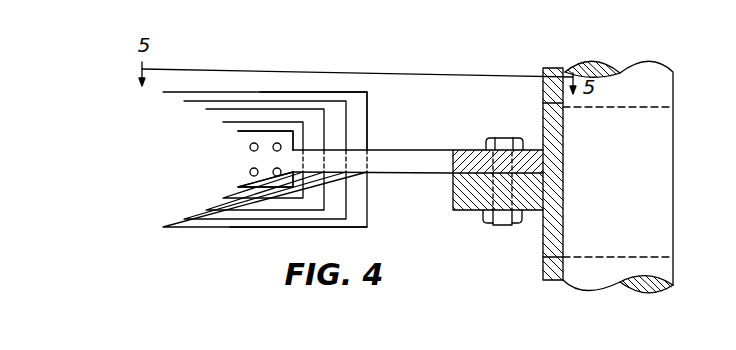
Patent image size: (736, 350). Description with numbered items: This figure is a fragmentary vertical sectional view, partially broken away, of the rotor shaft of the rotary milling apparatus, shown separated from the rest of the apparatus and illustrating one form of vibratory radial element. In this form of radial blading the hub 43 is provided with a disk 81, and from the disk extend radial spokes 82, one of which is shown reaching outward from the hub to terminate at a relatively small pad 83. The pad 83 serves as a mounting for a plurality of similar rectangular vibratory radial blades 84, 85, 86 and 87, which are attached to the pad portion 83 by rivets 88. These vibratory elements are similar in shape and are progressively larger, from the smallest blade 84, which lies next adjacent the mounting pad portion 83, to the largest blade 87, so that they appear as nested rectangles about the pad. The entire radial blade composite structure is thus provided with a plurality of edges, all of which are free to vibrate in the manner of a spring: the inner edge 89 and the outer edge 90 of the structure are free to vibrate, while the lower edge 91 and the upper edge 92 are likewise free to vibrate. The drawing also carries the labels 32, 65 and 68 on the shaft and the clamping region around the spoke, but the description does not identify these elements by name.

The shaft body 32 is at (593, 272).
The hub 43 is at (540, 237).
The clamp block 65 is at (470, 198).
The bolt 68 is at (508, 138).
The disk 81 is at (463, 150).
The radial spoke 82 is at (418, 168).
The pad 83 is at (246, 180).
The vibratory radial blade 84 is at (227, 183).
The vibratory radial blade 85 is at (212, 187).
The vibratory radial blade 86 is at (190, 172).
The vibratory radial blade 87 is at (168, 160).
The rivet 88 is at (276, 143).
The inner edge 89 is at (368, 134).
The outer edge 90 is at (163, 143).
The lower edge 91 is at (281, 228).
The upper edge 92 is at (292, 92).